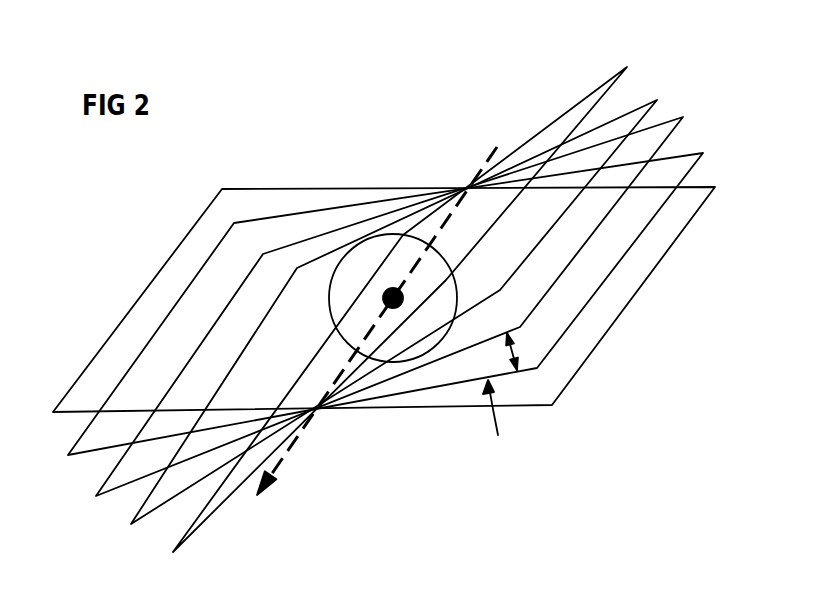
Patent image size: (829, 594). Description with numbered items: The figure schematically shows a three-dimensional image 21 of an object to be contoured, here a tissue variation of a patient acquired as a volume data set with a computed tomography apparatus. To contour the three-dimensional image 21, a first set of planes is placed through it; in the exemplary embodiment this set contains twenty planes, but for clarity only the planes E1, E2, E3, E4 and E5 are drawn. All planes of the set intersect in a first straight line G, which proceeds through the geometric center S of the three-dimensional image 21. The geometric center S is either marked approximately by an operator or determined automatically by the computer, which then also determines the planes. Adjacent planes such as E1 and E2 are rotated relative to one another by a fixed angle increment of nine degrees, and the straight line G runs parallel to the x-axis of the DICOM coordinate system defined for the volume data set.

The first plane E1 is at (573, 380).
The second plane E2 is at (595, 297).
The third plane E3 is at (667, 120).
The fourth plane E4 is at (637, 103).
The fifth plane E5 is at (580, 100).
The first straight line G is at (487, 158).
The geometric center S is at (401, 291).
The three-dimensional image 21 is at (329, 300).